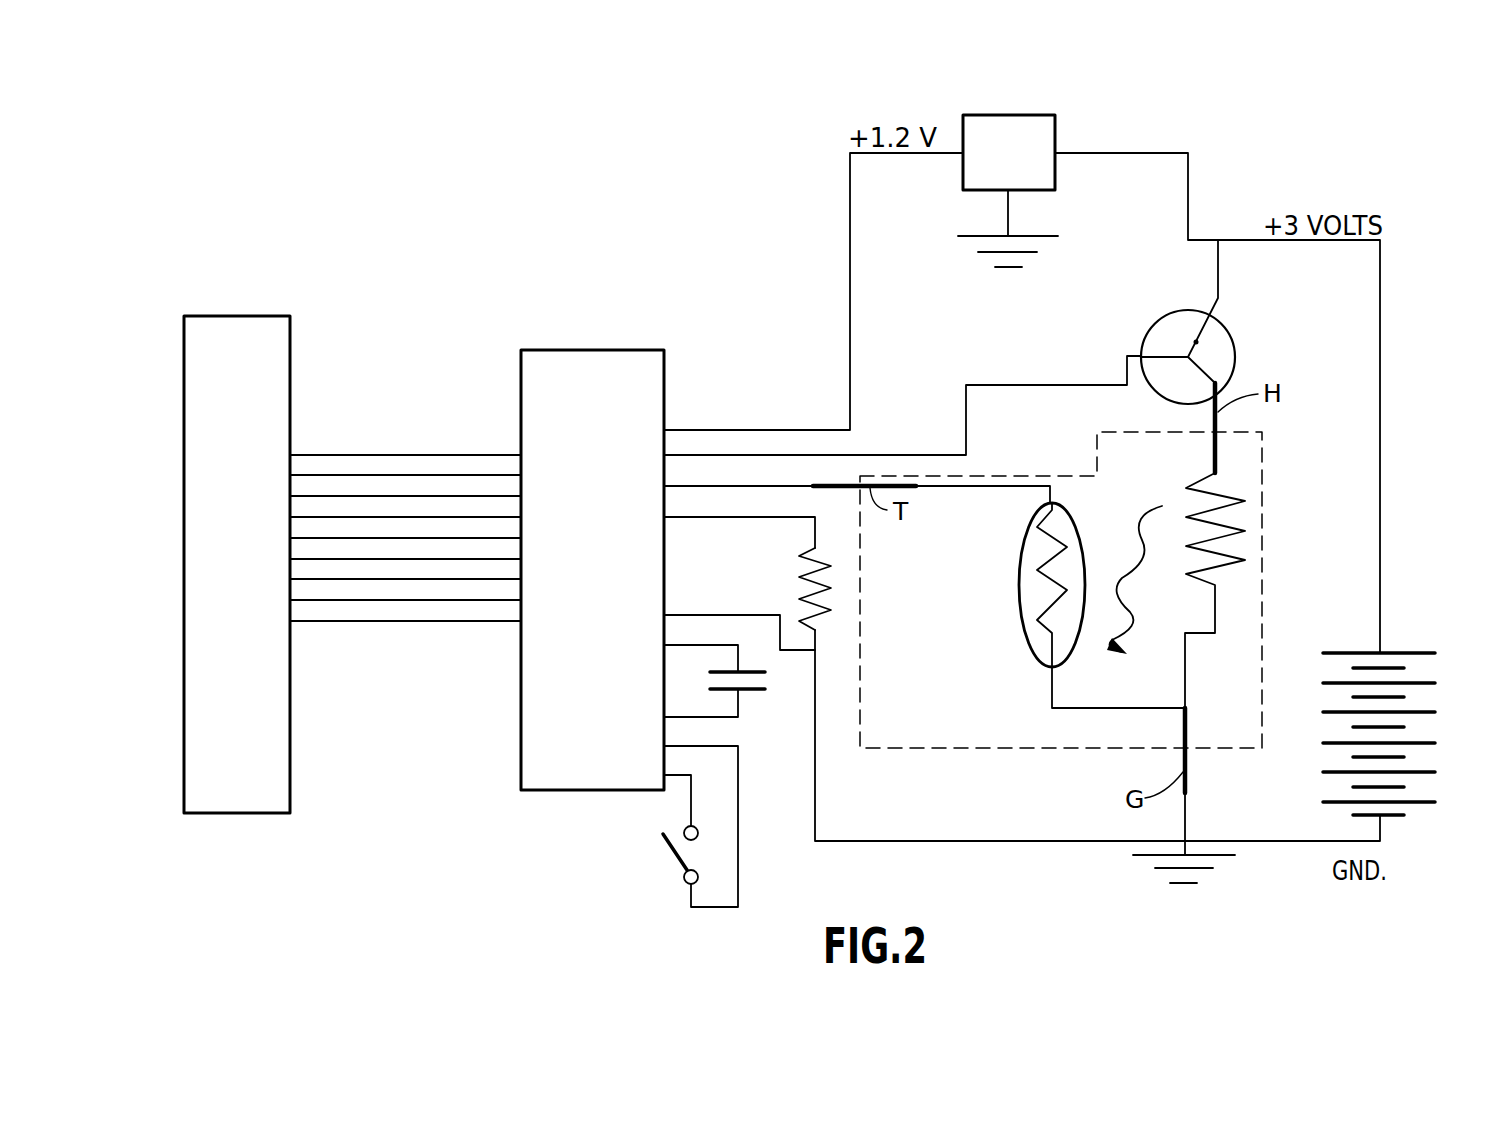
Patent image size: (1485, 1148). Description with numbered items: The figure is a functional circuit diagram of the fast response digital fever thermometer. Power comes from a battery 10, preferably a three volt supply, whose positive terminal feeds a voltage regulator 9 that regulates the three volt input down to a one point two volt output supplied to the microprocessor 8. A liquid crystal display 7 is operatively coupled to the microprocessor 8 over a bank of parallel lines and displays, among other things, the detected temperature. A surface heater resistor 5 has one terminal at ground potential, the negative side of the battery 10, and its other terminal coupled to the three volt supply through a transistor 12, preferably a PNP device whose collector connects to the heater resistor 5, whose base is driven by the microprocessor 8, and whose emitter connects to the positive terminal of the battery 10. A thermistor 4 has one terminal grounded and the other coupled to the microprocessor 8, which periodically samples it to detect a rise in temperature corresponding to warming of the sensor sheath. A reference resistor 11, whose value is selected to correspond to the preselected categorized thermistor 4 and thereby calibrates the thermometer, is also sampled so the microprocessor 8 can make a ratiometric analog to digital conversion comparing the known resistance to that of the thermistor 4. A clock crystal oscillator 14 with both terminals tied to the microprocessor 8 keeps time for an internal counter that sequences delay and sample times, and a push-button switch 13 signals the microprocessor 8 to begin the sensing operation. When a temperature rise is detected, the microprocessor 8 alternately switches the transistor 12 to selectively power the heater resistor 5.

The thermistor 4 is at (1022, 567).
The surface heater resistor 5 is at (1215, 493).
The liquid crystal display (LCD) 7 is at (238, 316).
The microprocessor 8 is at (592, 350).
The voltage regulator 9 is at (1030, 115).
The battery 10 is at (1405, 653).
The reference resistor 11 is at (807, 571).
The transistor 12 is at (1233, 342).
The push-button switch 13 is at (670, 863).
The clock crystal oscillator 14 is at (760, 690).